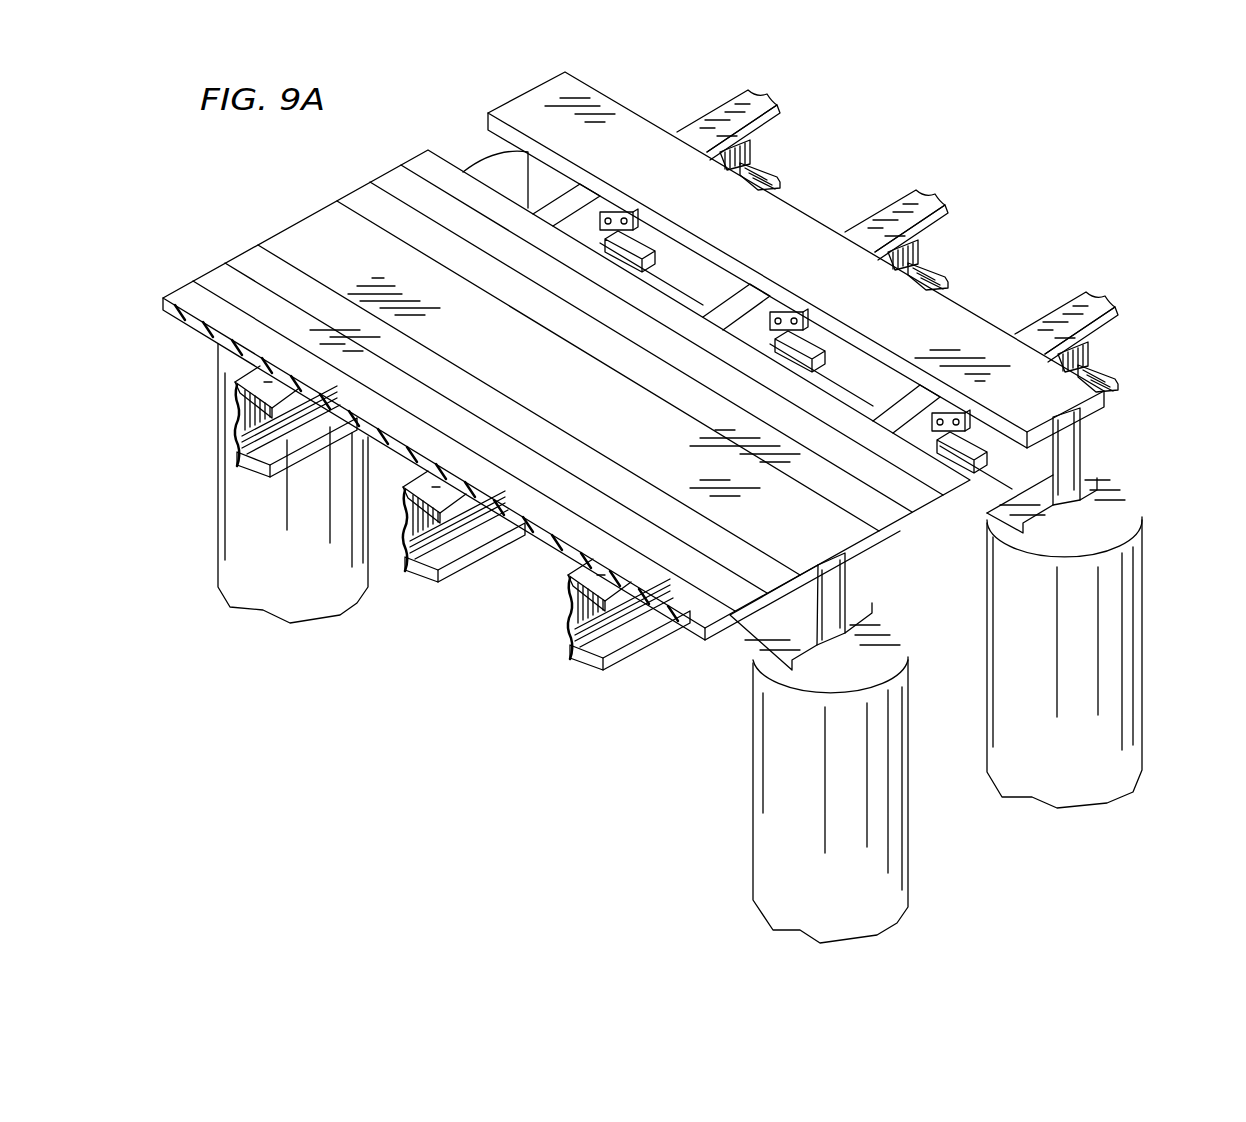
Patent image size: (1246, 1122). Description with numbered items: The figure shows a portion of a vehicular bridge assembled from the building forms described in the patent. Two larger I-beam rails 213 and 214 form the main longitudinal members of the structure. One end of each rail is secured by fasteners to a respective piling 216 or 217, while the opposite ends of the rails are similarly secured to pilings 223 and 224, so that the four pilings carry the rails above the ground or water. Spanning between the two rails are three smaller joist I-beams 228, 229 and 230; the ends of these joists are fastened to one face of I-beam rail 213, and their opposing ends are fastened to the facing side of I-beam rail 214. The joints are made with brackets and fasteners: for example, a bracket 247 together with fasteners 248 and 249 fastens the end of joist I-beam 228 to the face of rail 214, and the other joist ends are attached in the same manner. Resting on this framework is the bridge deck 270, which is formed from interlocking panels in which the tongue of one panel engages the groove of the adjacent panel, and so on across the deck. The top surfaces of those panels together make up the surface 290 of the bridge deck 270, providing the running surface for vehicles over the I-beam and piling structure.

The bridge deck 270 is at (214, 238).
The larger I-beam rail 214 is at (325, 234).
The surface of bridge deck 290 is at (392, 228).
The piling 223 is at (502, 170).
The larger I-beam rail 213 is at (657, 143).
The smaller joist I-beam 228 is at (782, 118).
The smaller joist I-beam 229 is at (953, 215).
The smaller joist I-beam 230 is at (1122, 315).
The fastener 248 is at (783, 313).
The bracket 247 is at (800, 323).
The fastener 249 is at (797, 333).
The piling 224 is at (213, 383).
The piling 217 is at (780, 815).
The piling 216 is at (1123, 588).